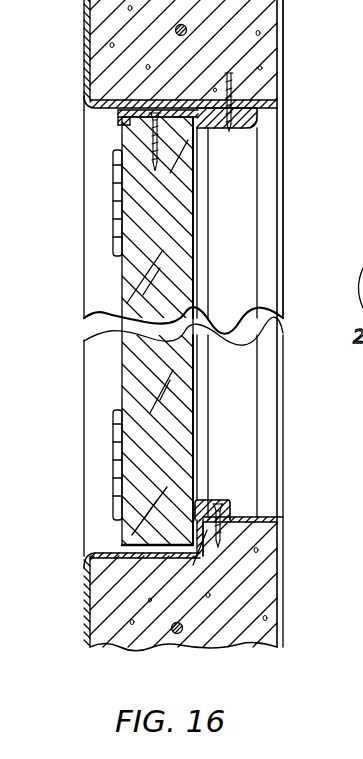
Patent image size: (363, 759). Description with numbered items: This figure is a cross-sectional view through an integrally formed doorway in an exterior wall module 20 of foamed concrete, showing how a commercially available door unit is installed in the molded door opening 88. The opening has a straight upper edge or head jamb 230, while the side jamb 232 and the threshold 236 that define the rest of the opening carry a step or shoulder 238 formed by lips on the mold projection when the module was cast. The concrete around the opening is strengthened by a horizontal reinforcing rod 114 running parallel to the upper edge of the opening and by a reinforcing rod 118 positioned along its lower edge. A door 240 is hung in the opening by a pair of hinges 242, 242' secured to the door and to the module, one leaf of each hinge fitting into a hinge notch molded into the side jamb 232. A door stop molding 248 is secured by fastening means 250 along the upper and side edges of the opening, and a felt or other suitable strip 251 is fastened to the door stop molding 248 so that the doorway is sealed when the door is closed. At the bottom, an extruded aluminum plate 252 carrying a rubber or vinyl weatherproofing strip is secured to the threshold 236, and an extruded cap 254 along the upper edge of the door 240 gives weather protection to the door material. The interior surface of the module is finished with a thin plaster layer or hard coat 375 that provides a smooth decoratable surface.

The module 20 is at (76, 43).
The door opening 88 is at (94, 331).
The horizontal reinforcing rod 114 is at (190, 30).
The reinforcing rod 118 is at (182, 633).
The head jamb 230 is at (98, 107).
The side jamb 232 is at (90, 263).
The threshold 236 is at (105, 553).
The step or shoulder 238 is at (180, 553).
The door 240 is at (137, 378).
The hinge 242 is at (75, 203).
The hinge 242' is at (72, 465).
The door stop molding 248 is at (245, 113).
The fastening means 250 is at (226, 86).
The felt strip 251 is at (203, 130).
The extruded aluminum plate 252 is at (230, 508).
The extruded cap 254 is at (118, 121).
The plaster layer or hard coat 375 is at (284, 50).